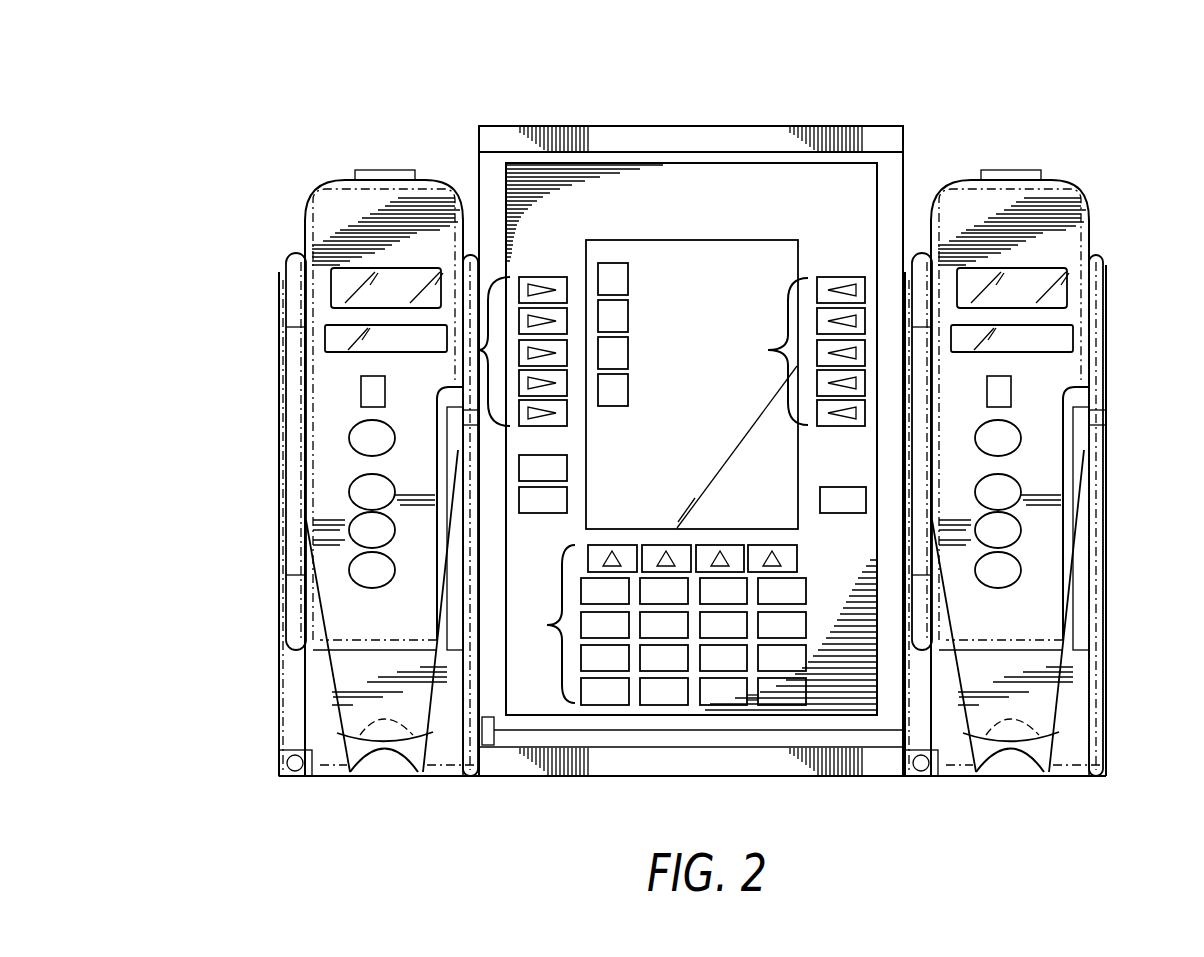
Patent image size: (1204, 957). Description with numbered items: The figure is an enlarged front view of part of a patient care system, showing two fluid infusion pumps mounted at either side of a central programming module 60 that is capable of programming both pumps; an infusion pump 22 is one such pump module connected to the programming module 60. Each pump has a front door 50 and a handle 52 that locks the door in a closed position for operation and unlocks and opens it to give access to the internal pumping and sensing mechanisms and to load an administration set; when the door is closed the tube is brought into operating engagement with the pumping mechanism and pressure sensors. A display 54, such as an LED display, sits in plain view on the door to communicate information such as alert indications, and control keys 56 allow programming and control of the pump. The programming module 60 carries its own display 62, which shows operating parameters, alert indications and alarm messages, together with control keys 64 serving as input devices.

The infusion pump 22 is at (1048, 175).
The front door 50 is at (1090, 668).
The handle 52 is at (1040, 718).
The display 54 is at (1067, 283).
The control keys 56 is at (1021, 440).
The programming module 60 is at (551, 403).
The display 62 is at (687, 240).
The control keys 64 is at (478, 350).